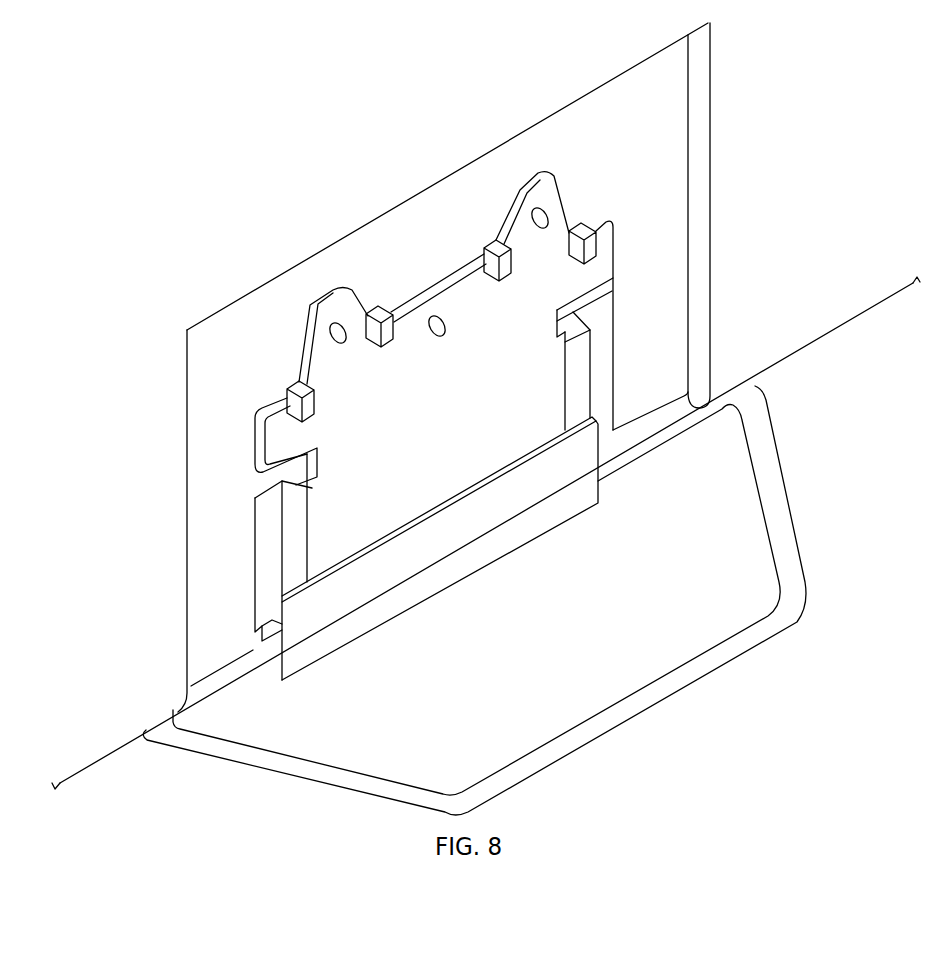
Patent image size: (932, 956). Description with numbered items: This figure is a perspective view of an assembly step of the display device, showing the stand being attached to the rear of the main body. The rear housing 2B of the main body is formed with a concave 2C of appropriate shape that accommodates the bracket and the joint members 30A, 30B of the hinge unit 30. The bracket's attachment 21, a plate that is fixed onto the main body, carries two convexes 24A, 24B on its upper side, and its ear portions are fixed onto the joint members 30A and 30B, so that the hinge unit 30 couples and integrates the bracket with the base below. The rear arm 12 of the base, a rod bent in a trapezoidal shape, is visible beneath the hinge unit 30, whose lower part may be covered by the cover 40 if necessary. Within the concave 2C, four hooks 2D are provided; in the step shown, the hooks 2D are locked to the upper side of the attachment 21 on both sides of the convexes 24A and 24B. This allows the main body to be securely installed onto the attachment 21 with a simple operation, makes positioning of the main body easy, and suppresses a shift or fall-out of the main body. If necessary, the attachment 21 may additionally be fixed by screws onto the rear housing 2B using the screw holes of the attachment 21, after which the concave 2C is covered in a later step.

The rear housing 2B is at (877, 300).
The concave 2C is at (600, 122).
The hooks 2D is at (577, 229).
The rear arm 12 is at (768, 463).
The attachment 21 is at (463, 292).
The convex 24A is at (537, 195).
The convex 24B is at (337, 300).
The hinge unit 30 is at (707, 500).
The joint member 30A is at (580, 388).
The joint member 30B is at (292, 523).
The cover 40 is at (470, 562).